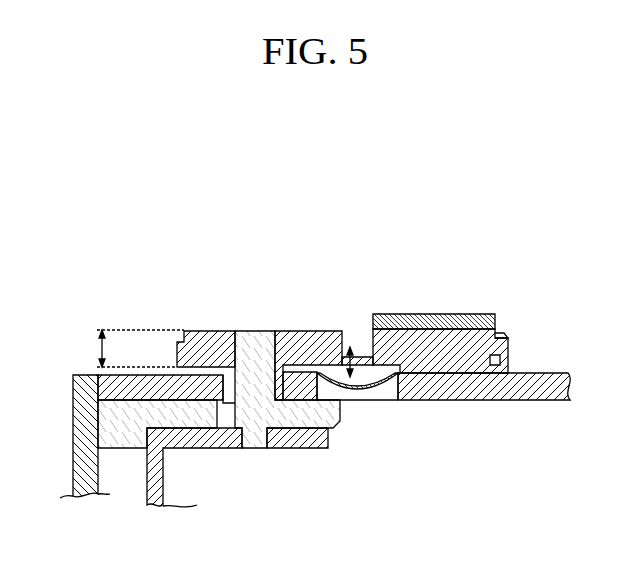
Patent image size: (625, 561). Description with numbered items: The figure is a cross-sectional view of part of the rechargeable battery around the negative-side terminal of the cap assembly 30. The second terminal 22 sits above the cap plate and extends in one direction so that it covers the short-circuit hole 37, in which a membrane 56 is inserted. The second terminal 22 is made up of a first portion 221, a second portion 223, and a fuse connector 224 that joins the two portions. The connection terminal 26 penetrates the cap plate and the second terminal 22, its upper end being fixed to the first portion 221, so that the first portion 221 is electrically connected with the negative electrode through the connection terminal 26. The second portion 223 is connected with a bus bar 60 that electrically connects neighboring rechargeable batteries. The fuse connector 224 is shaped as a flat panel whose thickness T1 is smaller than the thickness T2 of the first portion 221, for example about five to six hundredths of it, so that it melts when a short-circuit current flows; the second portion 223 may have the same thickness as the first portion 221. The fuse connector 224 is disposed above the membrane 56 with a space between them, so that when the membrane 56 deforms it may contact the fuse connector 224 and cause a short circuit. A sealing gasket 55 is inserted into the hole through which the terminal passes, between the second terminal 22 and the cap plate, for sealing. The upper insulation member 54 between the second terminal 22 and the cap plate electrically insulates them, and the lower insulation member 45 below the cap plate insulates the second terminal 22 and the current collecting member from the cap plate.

The second terminal 22 is at (352, 308).
The connection terminal 26 is at (255, 345).
The first portion 221 is at (309, 340).
The fuse connector 224 is at (348, 357).
The second portion 223 is at (406, 338).
The bus bar 60 is at (462, 322).
The upper insulation member 54 is at (507, 337).
The cap assembly 30 is at (545, 373).
The sealing gasket 55 is at (193, 390).
The lower insulation member 45 is at (120, 422).
The membrane 56 is at (374, 394).
The short-circuit hole 37 is at (392, 396).
The thickness of the fuse connector T1 is at (350, 345).
The thickness of the first portion T2 is at (126, 348).